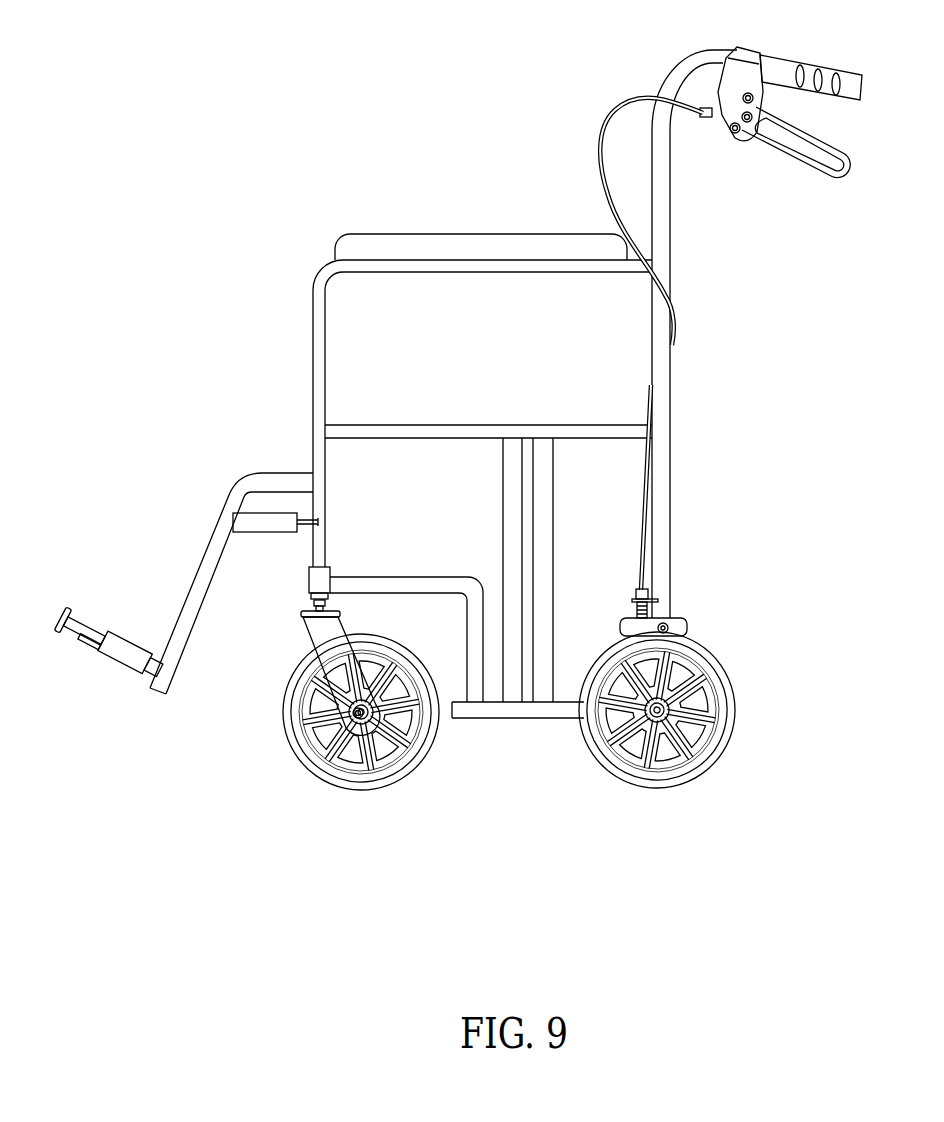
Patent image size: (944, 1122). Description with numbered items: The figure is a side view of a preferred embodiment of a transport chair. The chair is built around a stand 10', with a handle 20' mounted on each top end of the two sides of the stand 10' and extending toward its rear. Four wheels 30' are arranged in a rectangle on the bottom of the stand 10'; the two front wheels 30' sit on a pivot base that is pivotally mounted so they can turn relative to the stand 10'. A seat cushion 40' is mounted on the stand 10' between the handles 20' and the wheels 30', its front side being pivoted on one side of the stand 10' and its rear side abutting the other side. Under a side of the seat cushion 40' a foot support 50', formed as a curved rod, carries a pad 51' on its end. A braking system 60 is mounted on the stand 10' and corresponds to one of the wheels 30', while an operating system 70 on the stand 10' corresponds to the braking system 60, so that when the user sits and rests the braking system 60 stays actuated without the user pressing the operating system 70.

The stand 10' is at (536, 424).
The handle 20' is at (757, 95).
The wheel 30' is at (509, 706).
The seat cushion 40' is at (458, 214).
The foot support 50' is at (231, 583).
The pad 51' is at (104, 622).
The braking system 60 is at (632, 609).
The operating system 70 is at (596, 121).